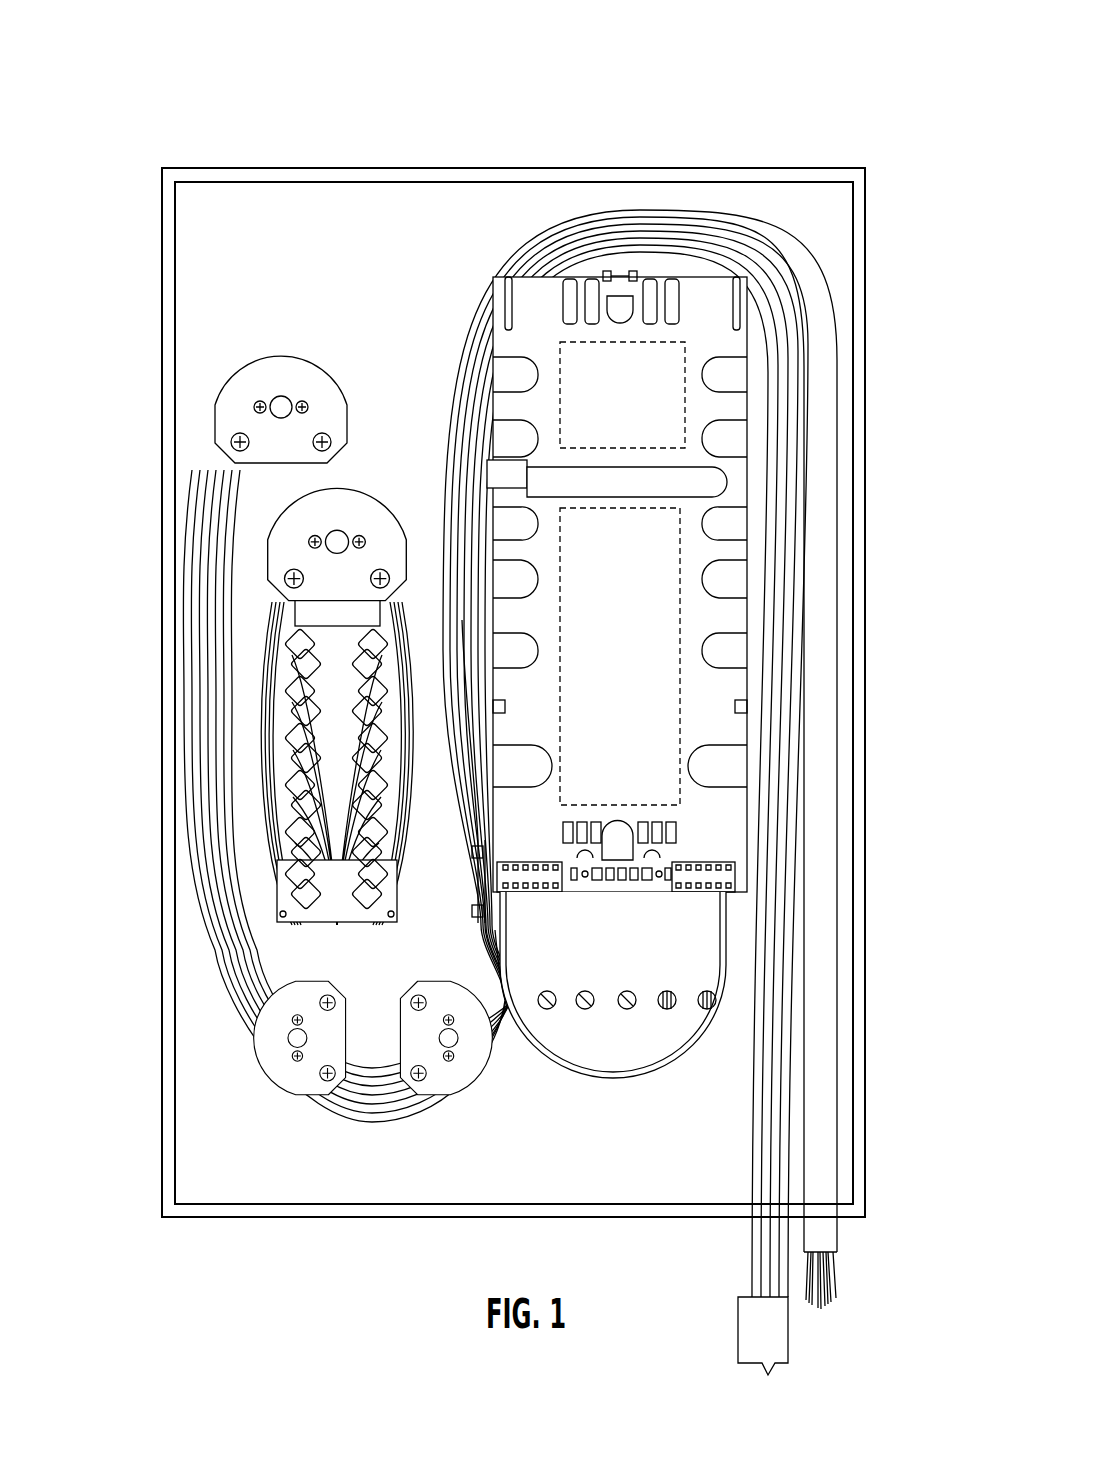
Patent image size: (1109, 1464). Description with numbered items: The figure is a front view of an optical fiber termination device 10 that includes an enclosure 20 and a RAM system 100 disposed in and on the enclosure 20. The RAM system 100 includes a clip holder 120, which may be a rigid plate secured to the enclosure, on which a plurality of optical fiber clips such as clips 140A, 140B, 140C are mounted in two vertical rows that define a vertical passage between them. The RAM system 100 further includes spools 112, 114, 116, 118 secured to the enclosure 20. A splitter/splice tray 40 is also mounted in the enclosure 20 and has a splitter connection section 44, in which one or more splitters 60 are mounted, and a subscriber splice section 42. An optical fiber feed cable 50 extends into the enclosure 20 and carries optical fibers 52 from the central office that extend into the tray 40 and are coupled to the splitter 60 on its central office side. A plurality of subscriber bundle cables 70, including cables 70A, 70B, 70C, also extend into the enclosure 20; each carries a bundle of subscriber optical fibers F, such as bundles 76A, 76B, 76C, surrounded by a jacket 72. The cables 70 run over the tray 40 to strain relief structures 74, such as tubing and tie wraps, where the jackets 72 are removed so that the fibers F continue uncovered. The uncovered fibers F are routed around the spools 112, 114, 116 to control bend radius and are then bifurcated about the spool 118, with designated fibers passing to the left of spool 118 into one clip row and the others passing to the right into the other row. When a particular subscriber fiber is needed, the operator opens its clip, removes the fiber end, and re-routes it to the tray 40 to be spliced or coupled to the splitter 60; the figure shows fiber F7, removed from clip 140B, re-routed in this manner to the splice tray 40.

The optical fiber termination device 10 is at (685, 106).
The enclosure 20 is at (380, 168).
The splitter connection section 44 is at (713, 293).
The splitter 60 is at (668, 356).
The spool 116 is at (278, 365).
The spool 118 is at (368, 518).
The RAM system 100 is at (423, 603).
The optical fiber clip 140A is at (193, 552).
The optical fiber clip 140B is at (268, 695).
The optical fiber clip 140C is at (268, 765).
The optical fiber bundle 76A is at (292, 653).
The optical fiber bundle 76B is at (288, 683).
The optical fiber bundle 76C is at (288, 742).
The jacket 72 is at (480, 818).
The strain relief structure 74 is at (480, 888).
The clip holder 120 is at (300, 913).
The subscriber splice section 42 is at (532, 837).
The splitter/splice tray 40 is at (577, 894).
The optical fiber F7 is at (692, 1048).
The subscriber optical fiber F is at (504, 1008).
The spool 114 is at (283, 1080).
The spool 112 is at (468, 1072).
The subscriber bundle cable 70A is at (745, 1246).
The subscriber bundle cable 70B is at (755, 1262).
The subscriber bundle cable 70C is at (765, 1280).
The subscriber bundle cables 70 is at (503, 799).
The optical fiber feed cable 50 is at (826, 1237).
The optical fibers 52 is at (832, 1290).